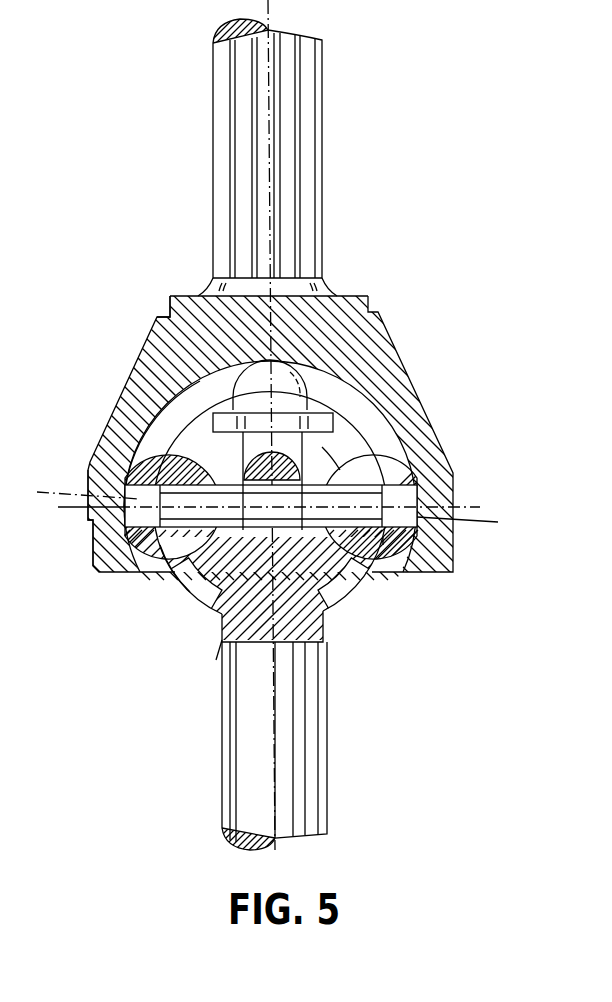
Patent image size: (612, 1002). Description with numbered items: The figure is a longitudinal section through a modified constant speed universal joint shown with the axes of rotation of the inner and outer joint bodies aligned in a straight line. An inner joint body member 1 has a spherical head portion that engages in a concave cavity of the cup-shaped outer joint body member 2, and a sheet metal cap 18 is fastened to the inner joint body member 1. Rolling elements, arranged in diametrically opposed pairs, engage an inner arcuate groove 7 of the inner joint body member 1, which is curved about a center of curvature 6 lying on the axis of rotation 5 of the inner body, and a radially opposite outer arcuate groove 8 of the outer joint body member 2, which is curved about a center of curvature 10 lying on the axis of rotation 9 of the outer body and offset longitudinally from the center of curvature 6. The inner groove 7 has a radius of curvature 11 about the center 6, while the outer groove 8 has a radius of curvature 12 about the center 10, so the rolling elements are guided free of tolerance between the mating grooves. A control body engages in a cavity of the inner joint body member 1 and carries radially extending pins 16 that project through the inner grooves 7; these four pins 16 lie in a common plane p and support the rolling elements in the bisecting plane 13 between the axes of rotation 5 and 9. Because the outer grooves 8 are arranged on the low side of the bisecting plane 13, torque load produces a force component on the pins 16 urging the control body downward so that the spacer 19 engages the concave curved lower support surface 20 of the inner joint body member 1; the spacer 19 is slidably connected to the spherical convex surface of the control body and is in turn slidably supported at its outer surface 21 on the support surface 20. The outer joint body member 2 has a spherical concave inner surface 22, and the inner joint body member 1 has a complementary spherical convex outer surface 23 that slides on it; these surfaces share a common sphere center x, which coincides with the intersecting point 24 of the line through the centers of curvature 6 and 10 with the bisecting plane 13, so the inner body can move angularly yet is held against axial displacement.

The inner joint body member 1 is at (268, 640).
The outer joint body member 2 is at (200, 318).
The axis of rotation 5 is at (274, 722).
The center of curvature 6 is at (302, 478).
The inner arcuate groove 7 is at (347, 425).
The outer arcuate groove 8 is at (262, 382).
The axis of rotation 9 is at (269, 128).
The center of curvature 10 is at (330, 552).
The radius of curvature 11 is at (410, 545).
The radius of curvature 12 is at (125, 483).
The bisecting plane 13 is at (80, 506).
The pins 16 is at (392, 493).
The sheet metal cap 18 is at (232, 420).
The spacer 19 is at (197, 563).
The lower support surface 20 is at (340, 595).
The outer surface 21 is at (220, 590).
The spherical concave inner surface 22 is at (200, 415).
The outer surface 23 is at (365, 452).
The intersecting point 24 is at (180, 452).
The common plane P-P p is at (265, 509).
The common sphere center x is at (222, 640).